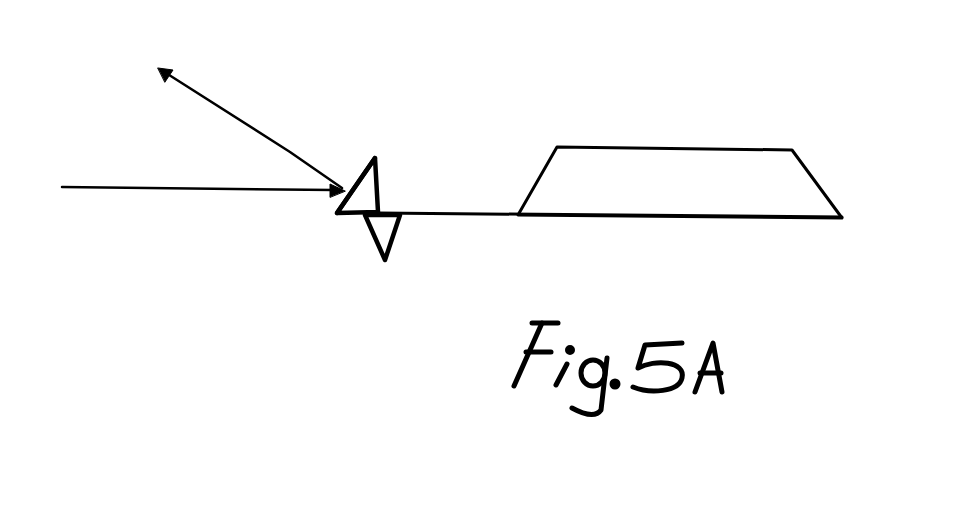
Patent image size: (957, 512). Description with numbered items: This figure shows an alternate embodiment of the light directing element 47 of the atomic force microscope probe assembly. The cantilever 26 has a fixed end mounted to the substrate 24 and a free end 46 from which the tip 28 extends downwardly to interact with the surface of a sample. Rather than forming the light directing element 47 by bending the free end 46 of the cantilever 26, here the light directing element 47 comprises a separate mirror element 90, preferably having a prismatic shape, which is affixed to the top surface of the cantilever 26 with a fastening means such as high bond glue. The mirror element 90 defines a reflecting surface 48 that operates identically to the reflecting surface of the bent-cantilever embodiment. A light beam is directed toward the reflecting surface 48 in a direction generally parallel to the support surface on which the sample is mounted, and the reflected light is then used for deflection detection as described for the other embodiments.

The substrate 24 is at (763, 165).
The cantilever 26 is at (416, 166).
The tip 28 is at (388, 228).
The free end 46 is at (318, 240).
The light directing element 47 is at (316, 138).
The reflecting surface 48 is at (362, 173).
The mirror element 90 is at (374, 195).